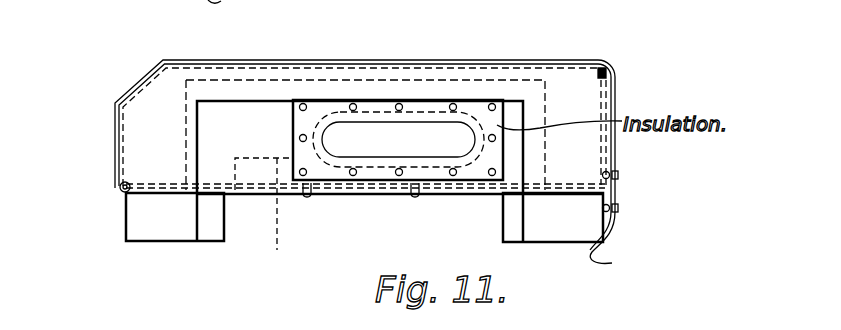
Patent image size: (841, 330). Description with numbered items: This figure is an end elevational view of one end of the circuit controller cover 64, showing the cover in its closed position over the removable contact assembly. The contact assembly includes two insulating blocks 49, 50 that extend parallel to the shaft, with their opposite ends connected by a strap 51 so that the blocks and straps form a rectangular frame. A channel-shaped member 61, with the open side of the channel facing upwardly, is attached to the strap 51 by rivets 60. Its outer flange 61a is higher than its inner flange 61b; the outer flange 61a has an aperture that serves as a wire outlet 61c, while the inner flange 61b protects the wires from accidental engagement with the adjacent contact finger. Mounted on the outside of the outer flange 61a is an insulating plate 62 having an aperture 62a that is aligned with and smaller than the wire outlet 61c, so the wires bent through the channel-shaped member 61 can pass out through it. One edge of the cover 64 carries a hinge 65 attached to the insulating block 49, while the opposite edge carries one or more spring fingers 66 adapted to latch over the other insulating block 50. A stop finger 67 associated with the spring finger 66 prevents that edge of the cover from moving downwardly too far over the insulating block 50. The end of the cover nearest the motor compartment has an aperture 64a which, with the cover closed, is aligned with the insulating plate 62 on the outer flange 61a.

The insulating block 49 is at (204, 232).
The insulating block 50 is at (513, 232).
The strap 51 is at (437, 197).
The rivets 60 is at (414, 197).
The channel-shaped member 61 is at (280, 153).
The outer flange 61a is at (254, 140).
The inner flange 61b is at (264, 206).
The wire outlet 61c is at (413, 112).
The insulating plate 62 is at (470, 108).
The aperture 62a is at (352, 128).
The cover 64 is at (579, 58).
The aperture 64a is at (230, 104).
The hinge 65 is at (118, 186).
The spring finger 66 is at (604, 262).
The stop finger 67 is at (609, 198).